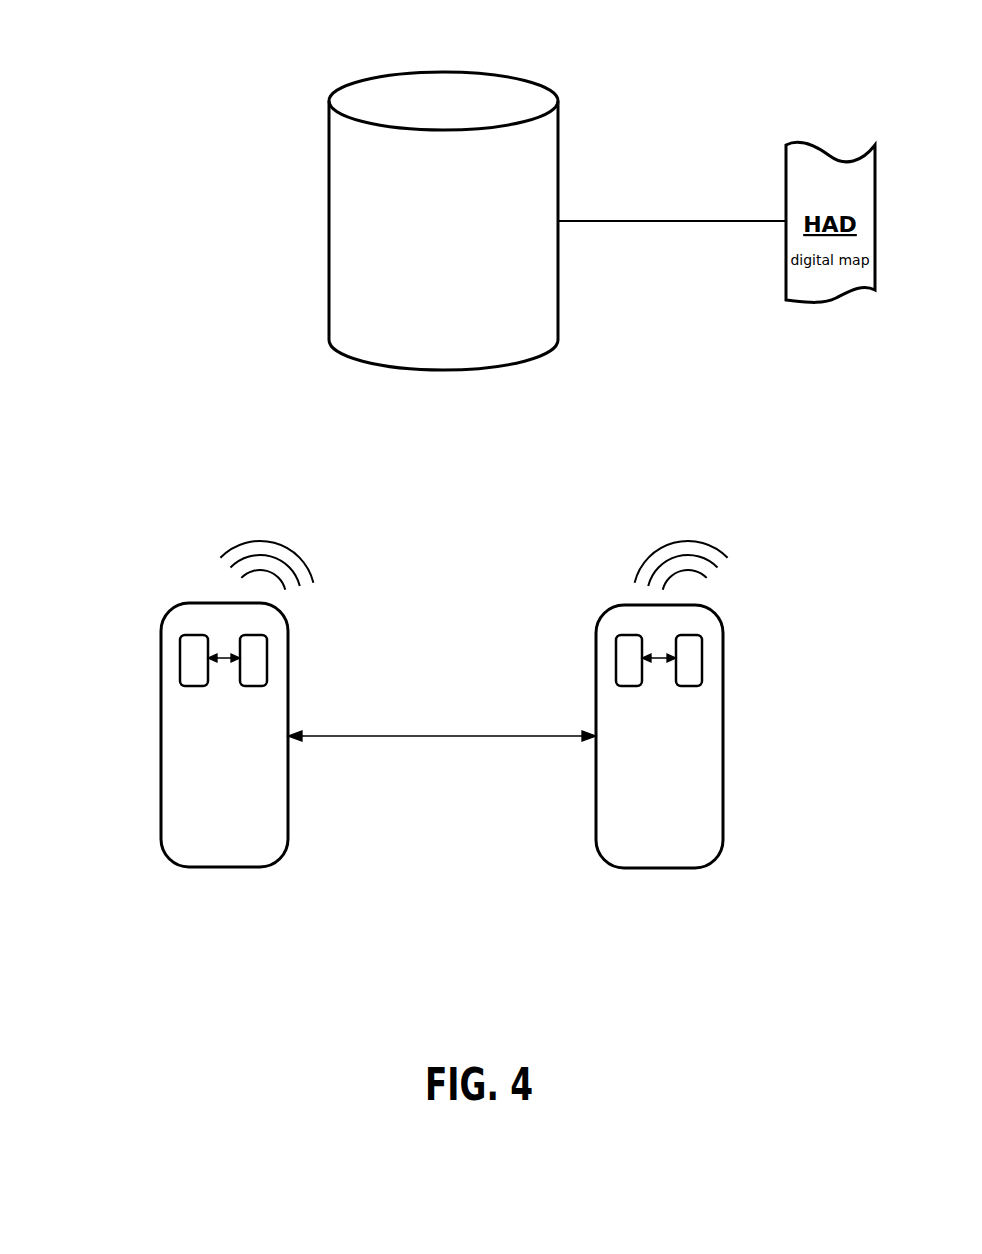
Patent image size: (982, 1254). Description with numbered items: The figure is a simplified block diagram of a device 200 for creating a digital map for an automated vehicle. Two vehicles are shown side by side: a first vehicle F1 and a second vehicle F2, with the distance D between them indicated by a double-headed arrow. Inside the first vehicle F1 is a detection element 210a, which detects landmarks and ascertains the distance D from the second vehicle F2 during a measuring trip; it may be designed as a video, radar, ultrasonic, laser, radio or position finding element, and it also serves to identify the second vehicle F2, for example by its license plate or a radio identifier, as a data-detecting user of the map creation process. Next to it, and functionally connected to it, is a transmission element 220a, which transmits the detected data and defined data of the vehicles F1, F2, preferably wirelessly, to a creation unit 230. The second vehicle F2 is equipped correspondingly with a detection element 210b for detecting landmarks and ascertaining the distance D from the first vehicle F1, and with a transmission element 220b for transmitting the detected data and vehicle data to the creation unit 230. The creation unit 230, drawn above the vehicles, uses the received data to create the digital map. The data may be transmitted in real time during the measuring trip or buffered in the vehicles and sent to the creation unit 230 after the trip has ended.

The creation unit 230 is at (443, 221).
The device 200 is at (152, 975).
The detection element 210a is at (180, 659).
The transmission element 220a is at (267, 659).
The detection element 210b is at (616, 659).
The transmission element 220b is at (702, 659).
The first vehicle F1 is at (227, 746).
The second vehicle F2 is at (662, 745).
The distance D is at (440, 740).